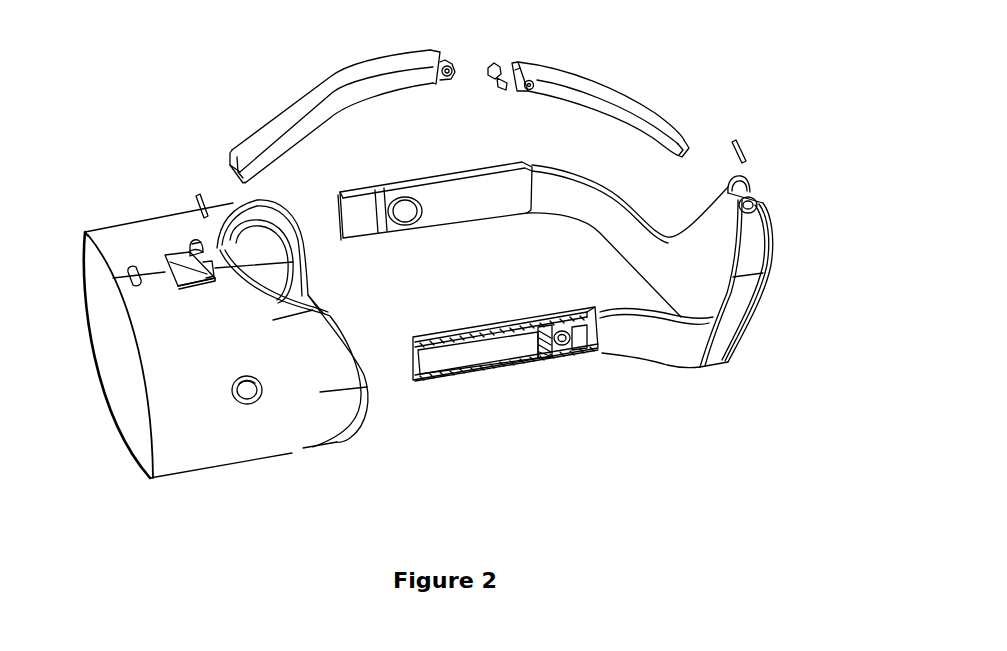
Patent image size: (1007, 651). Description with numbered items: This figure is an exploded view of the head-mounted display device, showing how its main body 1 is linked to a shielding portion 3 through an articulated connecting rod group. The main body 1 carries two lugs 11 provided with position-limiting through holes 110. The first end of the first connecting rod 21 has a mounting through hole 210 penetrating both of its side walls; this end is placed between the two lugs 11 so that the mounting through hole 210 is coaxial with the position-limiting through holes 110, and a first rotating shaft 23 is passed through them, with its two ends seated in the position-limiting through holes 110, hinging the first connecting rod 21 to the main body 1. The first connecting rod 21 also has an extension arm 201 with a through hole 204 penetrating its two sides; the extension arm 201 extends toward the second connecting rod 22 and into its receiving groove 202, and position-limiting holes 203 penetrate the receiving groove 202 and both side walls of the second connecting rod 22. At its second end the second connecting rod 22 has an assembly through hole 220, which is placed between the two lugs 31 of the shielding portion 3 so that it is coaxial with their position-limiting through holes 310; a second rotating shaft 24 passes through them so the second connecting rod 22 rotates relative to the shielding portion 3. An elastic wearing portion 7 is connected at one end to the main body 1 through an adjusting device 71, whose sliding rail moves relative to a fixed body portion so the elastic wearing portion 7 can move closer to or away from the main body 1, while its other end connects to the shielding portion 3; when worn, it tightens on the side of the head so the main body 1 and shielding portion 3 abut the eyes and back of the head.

The main body 1 is at (208, 458).
The lugs 11 is at (188, 260).
The position-limiting through holes 110 is at (193, 245).
The first rotating shaft 23 is at (197, 195).
The first connecting rod 21 is at (317, 88).
The mounting through hole 210 is at (232, 148).
The extension arm 201 is at (447, 64).
The through hole 204 is at (453, 66).
The receiving groove 202 is at (512, 63).
The position-limiting holes 203 is at (531, 81).
The second connecting rod 22 is at (613, 85).
The assembly through hole 220 is at (684, 137).
The second rotating shaft 24 is at (740, 142).
The elastic wearing portion 7 is at (633, 342).
The adjusting device 71 is at (485, 357).
The shielding portion 3 is at (742, 312).
The position-limiting through holes 310 is at (748, 178).
The lugs 31 is at (767, 207).